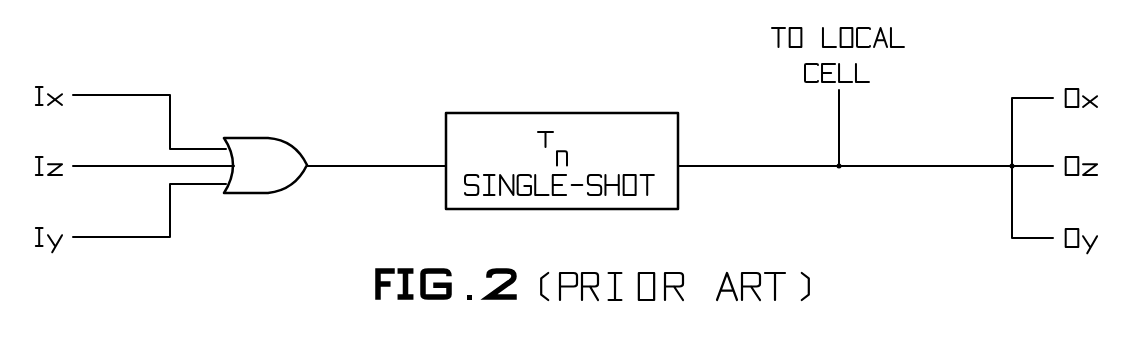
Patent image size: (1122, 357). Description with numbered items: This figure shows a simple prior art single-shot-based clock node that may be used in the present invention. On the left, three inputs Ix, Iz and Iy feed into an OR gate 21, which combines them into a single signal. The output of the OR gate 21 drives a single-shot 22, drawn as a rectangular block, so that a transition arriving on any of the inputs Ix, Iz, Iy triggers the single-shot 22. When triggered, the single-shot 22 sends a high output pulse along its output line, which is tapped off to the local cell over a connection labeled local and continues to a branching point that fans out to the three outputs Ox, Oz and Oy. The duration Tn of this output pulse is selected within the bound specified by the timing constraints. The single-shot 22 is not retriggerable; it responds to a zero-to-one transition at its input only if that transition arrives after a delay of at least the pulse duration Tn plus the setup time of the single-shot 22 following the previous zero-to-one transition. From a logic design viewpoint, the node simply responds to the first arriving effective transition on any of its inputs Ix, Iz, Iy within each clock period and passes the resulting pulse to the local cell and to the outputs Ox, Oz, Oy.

The OR gate 21 is at (272, 150).
The single-shot 22 is at (562, 135).
The input Ix is at (131, 118).
The input Iz is at (135, 166).
The input Iy is at (131, 218).
The output Ox is at (1054, 127).
The output Oz is at (1054, 166).
The output Oy is at (1054, 209).
The output pulse duration Tn is at (552, 148).
The local cell connection local is at (838, 97).